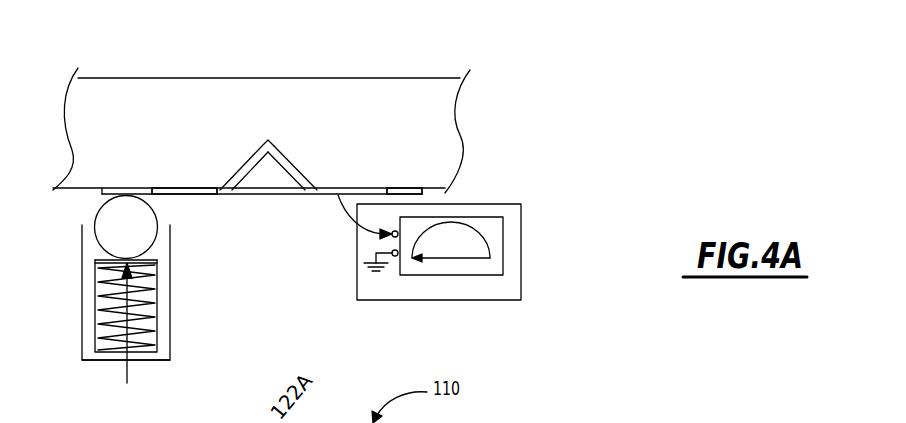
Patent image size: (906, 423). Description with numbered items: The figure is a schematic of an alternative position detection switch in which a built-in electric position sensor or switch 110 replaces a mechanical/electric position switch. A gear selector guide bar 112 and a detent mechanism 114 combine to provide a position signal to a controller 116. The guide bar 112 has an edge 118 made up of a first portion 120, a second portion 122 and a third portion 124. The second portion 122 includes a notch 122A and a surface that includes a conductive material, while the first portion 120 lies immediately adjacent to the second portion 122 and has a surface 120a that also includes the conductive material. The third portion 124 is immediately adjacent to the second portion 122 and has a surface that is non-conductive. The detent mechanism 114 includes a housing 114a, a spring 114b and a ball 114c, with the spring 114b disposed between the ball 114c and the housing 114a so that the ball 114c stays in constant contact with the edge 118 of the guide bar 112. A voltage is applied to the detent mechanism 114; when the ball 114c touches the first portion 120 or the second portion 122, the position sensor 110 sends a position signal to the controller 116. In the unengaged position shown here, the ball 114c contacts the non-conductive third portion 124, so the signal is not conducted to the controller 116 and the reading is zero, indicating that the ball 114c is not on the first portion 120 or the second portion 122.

The position sensor 110 is at (368, 63).
The guide bar 112 is at (447, 108).
The detent mechanism 114 is at (172, 338).
The housing 114a is at (160, 360).
The spring 114b is at (141, 292).
The ball 114c is at (127, 217).
The controller 116 is at (522, 252).
The edge 118 is at (76, 190).
The first portion 120 is at (268, 222).
The surface 120a is at (288, 172).
The second portion 122 is at (213, 194).
The notch 122A is at (292, 152).
The third portion 124 is at (146, 192).